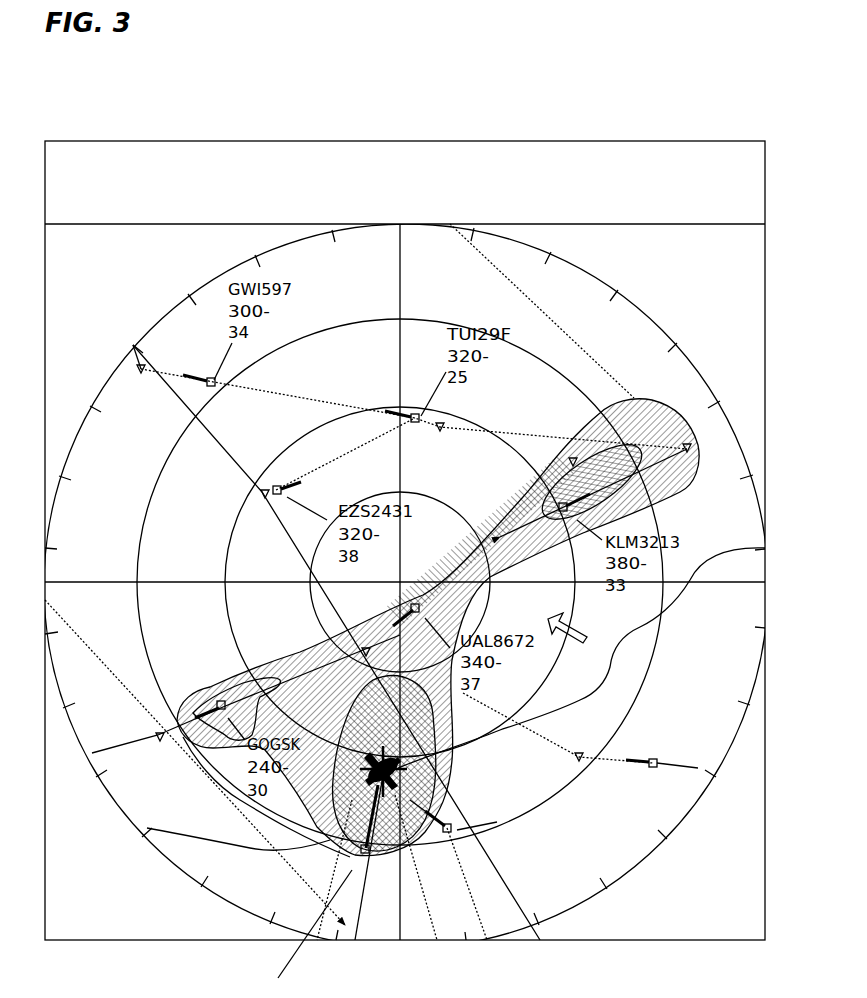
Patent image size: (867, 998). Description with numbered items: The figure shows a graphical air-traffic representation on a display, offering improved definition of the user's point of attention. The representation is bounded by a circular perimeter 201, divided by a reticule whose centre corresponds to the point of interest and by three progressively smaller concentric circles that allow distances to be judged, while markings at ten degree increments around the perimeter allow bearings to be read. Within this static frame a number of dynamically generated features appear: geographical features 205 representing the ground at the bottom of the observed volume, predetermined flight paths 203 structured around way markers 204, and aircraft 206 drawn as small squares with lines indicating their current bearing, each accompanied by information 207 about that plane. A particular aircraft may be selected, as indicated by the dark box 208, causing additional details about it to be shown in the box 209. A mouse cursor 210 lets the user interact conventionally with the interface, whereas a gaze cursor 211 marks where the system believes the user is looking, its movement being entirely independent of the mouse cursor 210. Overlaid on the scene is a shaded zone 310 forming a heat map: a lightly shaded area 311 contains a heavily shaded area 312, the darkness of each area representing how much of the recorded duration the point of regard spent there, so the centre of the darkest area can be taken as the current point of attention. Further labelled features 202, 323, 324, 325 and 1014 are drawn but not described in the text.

The box 209 is at (128, 132).
The circular perimeter 201 is at (178, 866).
The compass tick marks 202 is at (207, 884).
The predetermined flight paths 203 is at (341, 934).
The way markers 204 is at (307, 934).
The geographical features 205 is at (73, 890).
The aircraft 206 is at (452, 838).
The information 207 is at (529, 856).
The dark box 208 is at (374, 862).
The mouse cursor 210 is at (585, 645).
The gaze cursor 211 is at (432, 842).
The shaded zone 310 is at (633, 401).
The lightly shaded area 311 is at (636, 414).
The heavily shaded area 312 is at (620, 446).
The conflict sub-region 323 is at (214, 691).
The own aircraft symbol 324 is at (422, 767).
The high probability region around own aircraft 325 is at (414, 786).
The direction indicator 1014 is at (147, 462).